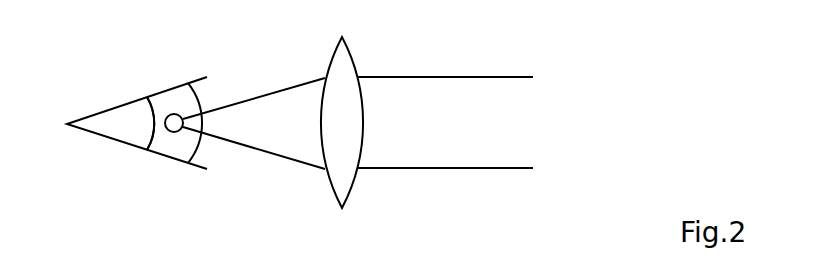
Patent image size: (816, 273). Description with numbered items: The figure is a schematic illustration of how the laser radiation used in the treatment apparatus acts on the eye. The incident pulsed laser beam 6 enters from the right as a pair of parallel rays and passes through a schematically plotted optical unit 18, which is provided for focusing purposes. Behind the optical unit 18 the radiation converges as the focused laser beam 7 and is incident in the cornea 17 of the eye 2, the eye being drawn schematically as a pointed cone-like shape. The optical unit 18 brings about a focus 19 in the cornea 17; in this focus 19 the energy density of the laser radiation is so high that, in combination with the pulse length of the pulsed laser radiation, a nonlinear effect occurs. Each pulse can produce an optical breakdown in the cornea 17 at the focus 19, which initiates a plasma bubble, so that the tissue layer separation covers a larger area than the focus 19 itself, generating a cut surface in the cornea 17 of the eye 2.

The eye 2 is at (127, 113).
The cornea 17 is at (181, 148).
The focus 19 is at (175, 133).
The focused laser beam 7 is at (300, 163).
The optical unit 18 is at (342, 191).
The laser beam 6 is at (483, 169).